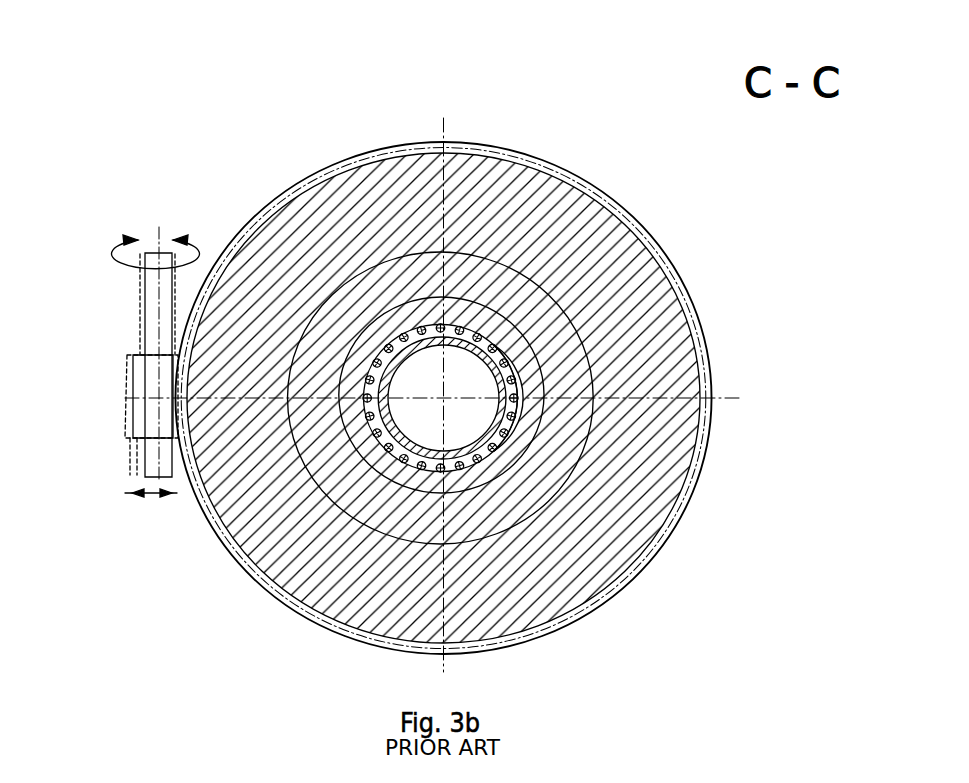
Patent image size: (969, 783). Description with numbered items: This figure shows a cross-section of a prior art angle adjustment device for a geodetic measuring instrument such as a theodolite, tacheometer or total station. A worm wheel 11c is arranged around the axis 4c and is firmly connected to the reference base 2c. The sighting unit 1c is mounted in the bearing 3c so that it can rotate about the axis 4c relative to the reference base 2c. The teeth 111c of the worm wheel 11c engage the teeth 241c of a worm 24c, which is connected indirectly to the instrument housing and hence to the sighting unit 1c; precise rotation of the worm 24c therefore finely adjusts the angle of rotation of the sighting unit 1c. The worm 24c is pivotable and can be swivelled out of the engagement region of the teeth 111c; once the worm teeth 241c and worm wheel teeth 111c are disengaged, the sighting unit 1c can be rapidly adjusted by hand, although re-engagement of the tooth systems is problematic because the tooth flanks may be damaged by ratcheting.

The sighting unit 1c is at (498, 375).
The reference base 2c is at (523, 365).
The bearing 3c is at (367, 357).
The axis 4c is at (440, 320).
The worm wheel 11c is at (293, 263).
The teeth of the worm wheel 111c is at (231, 243).
The worm 24c is at (155, 478).
The teeth of the worm 241c is at (139, 478).